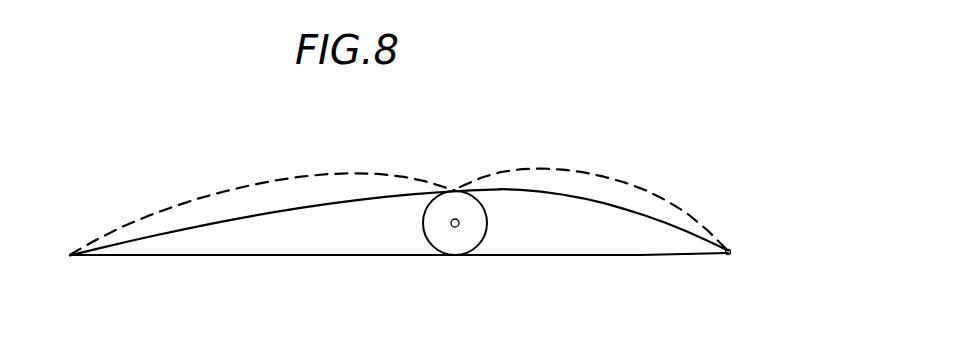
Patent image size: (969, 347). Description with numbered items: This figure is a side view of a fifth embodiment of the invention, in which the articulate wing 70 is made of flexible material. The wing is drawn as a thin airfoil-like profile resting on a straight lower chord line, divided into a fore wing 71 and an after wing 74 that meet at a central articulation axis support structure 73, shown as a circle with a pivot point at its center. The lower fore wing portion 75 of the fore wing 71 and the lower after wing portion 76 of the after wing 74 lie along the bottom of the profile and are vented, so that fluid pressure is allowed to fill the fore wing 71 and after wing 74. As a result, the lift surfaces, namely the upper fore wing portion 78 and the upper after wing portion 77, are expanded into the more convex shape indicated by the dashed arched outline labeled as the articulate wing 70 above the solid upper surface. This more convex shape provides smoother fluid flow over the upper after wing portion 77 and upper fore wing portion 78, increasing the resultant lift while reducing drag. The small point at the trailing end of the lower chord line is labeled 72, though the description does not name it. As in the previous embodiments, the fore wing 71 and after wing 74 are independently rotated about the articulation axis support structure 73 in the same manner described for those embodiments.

The articulate wing 70 is at (646, 179).
The fore wing 71 is at (560, 243).
The trailing edge point 72 is at (733, 250).
The articulation axis support structure 73 is at (450, 246).
The after wing 74 is at (205, 243).
The lower fore wing portion 75 is at (648, 258).
The lower after wing portion 76 is at (298, 256).
The upper after wing portion 77 is at (302, 204).
The upper fore wing portion 78 is at (516, 189).